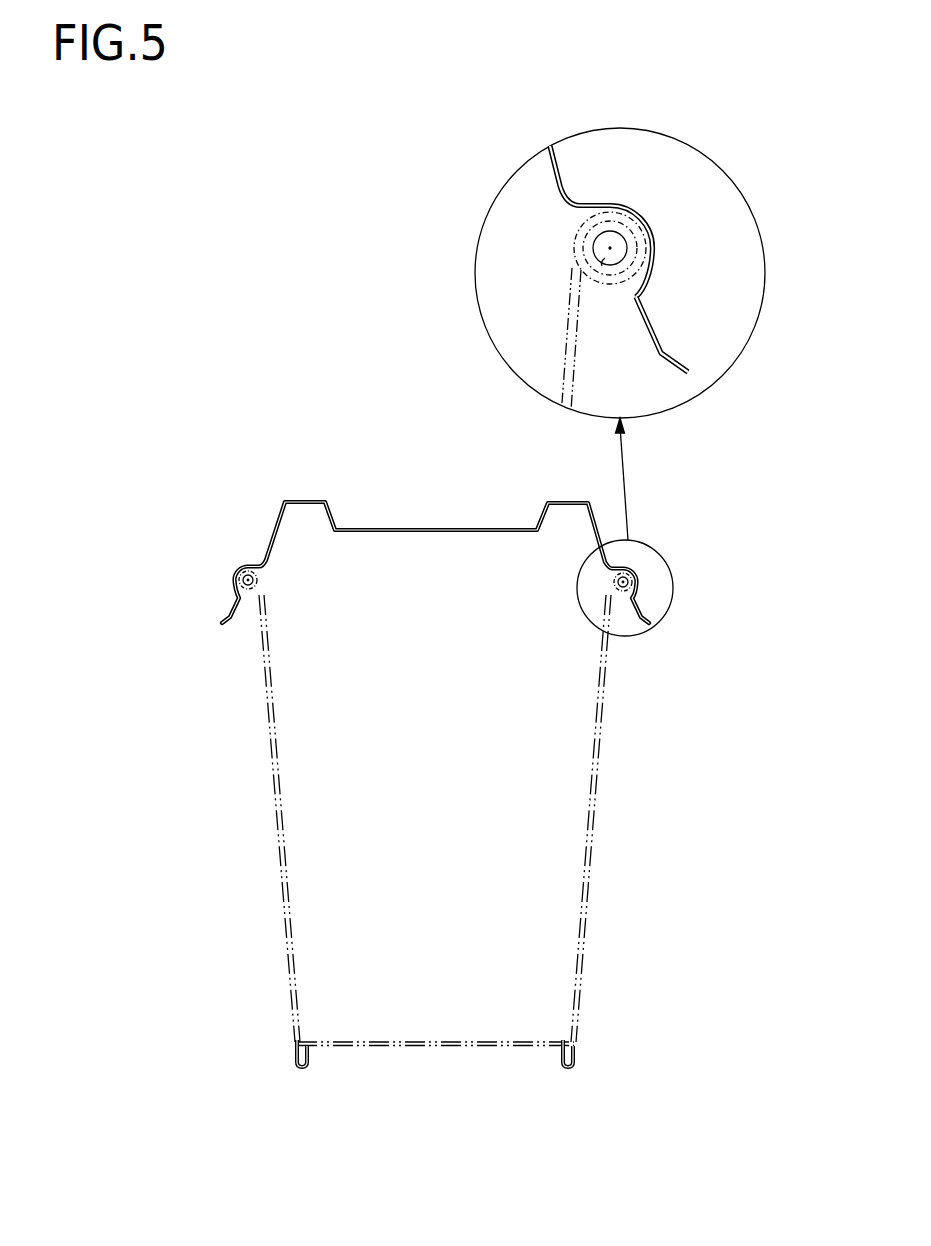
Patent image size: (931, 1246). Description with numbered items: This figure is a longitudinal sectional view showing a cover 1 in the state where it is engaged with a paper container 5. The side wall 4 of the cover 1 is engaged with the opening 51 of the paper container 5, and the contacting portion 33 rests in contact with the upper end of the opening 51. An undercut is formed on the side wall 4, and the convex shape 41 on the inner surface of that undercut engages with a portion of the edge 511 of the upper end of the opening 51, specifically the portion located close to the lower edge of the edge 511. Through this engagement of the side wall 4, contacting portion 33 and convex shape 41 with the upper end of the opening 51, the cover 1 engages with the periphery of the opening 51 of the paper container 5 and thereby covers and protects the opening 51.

The cover 1 is at (272, 530).
The side wall 4 is at (638, 606).
The convex shape 41 is at (633, 300).
The paper container 5 is at (600, 705).
The opening 51 is at (420, 587).
The edge 511 is at (607, 275).
The contacting portion 33 is at (603, 205).